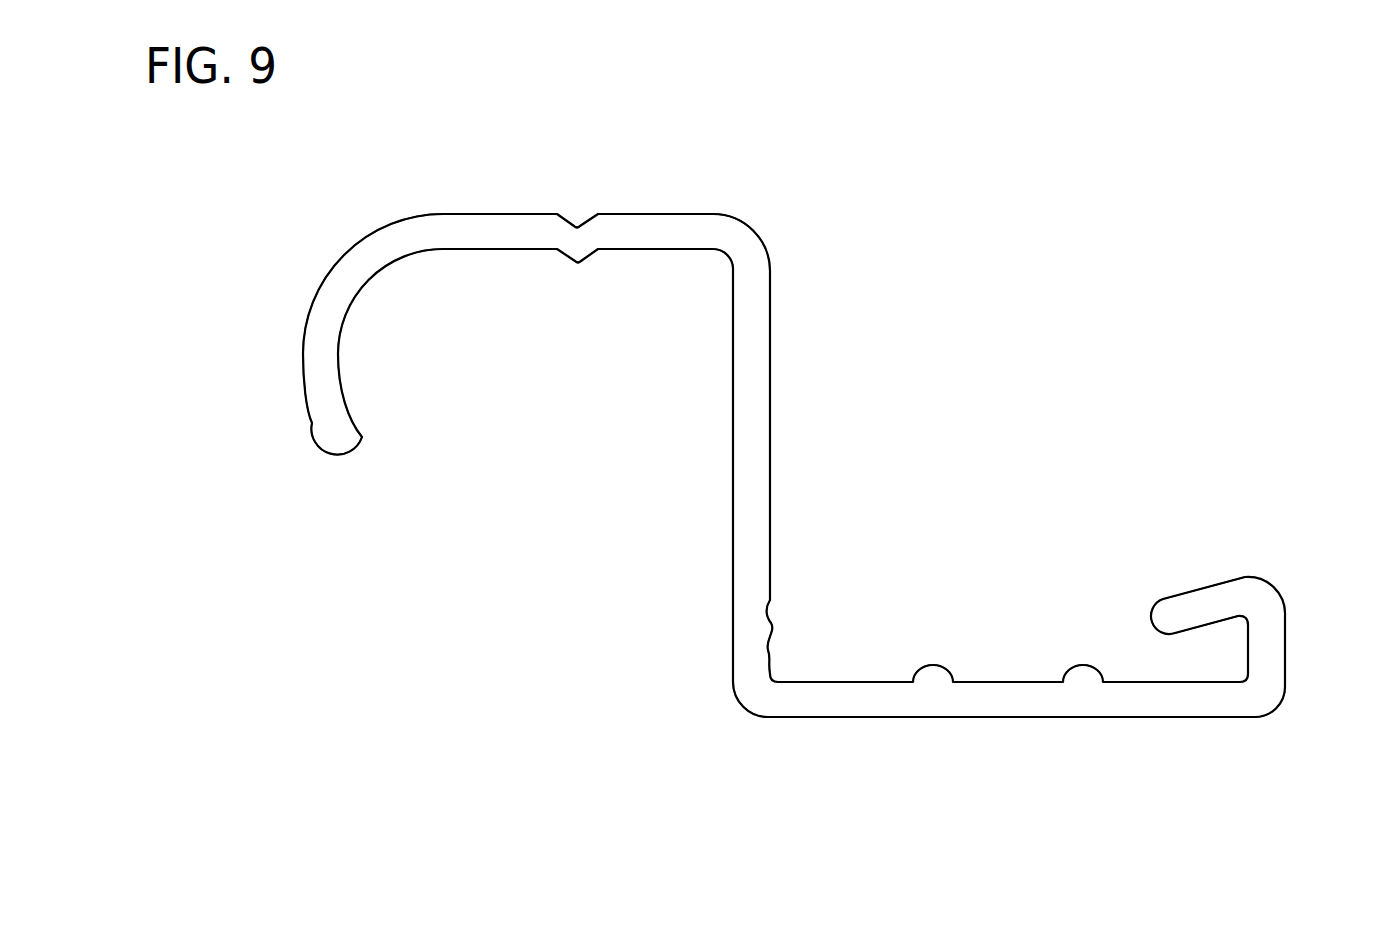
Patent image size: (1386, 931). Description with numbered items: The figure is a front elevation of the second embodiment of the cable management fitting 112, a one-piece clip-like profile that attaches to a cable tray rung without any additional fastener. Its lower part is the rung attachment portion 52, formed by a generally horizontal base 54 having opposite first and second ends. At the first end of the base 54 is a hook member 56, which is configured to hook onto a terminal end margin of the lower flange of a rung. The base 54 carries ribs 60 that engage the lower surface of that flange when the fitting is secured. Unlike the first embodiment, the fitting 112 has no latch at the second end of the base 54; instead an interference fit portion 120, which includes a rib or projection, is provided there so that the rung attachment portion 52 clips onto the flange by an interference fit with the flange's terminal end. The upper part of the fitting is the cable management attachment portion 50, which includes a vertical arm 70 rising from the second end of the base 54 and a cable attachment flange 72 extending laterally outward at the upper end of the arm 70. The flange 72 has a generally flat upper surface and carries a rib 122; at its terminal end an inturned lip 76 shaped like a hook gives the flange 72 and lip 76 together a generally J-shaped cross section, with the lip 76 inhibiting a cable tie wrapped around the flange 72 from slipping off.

The cable management fitting 112 is at (1152, 152).
The cable management attachment portion 50 is at (780, 290).
The cable attachment flange 72 is at (667, 213).
The rib 122 is at (578, 262).
The inturned lip 76 is at (318, 414).
The vertical arm 70 is at (760, 425).
The interference fit portion 120 is at (781, 629).
The rung attachment portion 52 is at (908, 728).
The ribs 60 is at (933, 665).
The base 54 is at (1138, 702).
The hook member 56 is at (1265, 593).